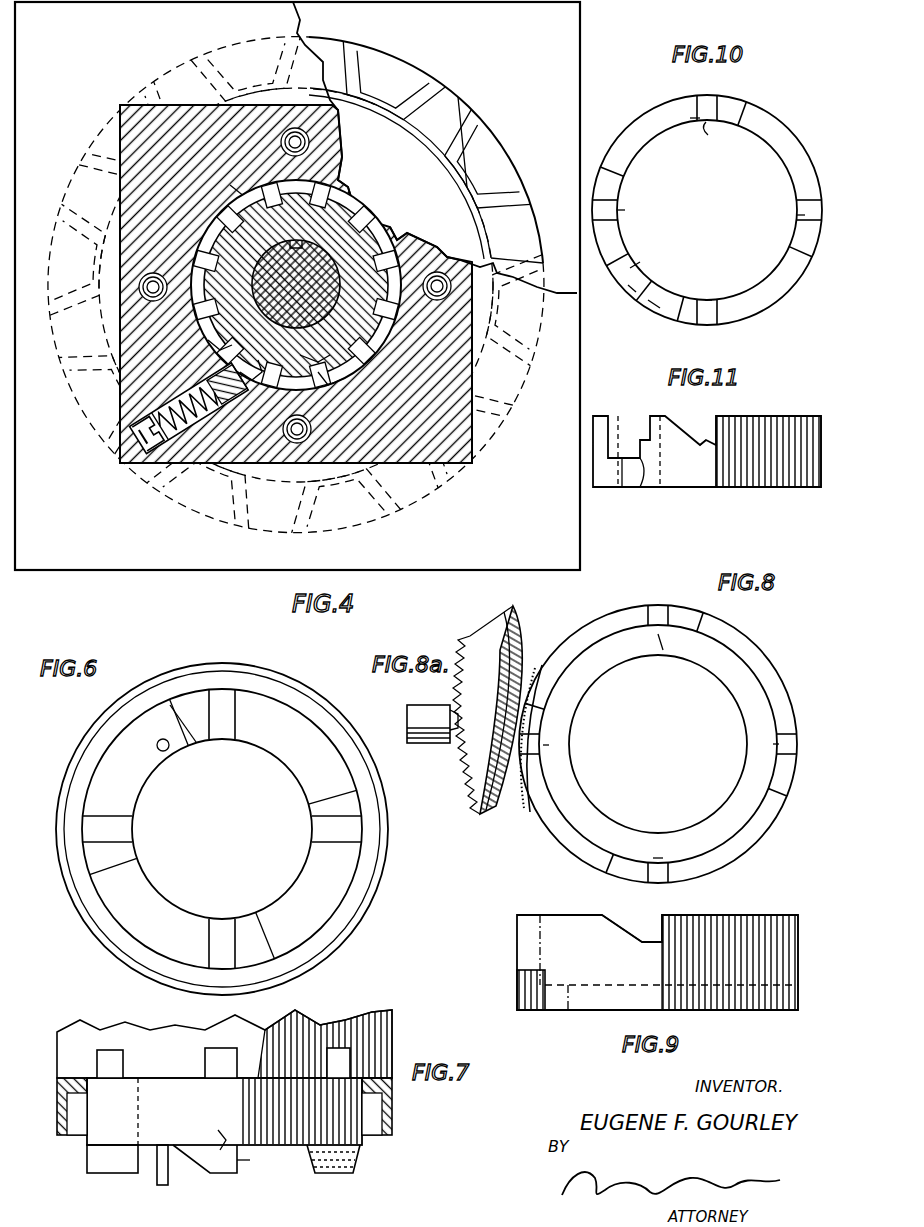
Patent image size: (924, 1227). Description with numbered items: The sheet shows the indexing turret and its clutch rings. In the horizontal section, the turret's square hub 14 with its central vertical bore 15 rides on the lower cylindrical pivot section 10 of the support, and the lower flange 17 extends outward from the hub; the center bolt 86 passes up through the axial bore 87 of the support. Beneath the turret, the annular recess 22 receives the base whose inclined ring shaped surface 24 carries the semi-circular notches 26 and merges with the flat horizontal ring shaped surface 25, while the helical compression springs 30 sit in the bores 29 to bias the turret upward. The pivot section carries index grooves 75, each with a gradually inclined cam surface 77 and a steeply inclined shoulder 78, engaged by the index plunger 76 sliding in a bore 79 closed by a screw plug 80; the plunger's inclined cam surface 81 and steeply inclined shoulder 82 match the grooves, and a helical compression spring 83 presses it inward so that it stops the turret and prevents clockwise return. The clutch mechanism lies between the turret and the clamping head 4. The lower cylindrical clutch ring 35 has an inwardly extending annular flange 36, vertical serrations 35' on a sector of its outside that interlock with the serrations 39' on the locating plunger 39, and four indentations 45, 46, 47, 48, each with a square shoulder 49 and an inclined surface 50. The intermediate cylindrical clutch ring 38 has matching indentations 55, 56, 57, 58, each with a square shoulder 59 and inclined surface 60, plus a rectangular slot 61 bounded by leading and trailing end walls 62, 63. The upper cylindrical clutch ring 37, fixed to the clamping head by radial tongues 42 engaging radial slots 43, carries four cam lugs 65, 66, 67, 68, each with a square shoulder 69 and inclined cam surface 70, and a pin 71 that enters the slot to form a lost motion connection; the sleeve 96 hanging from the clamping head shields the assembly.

In FIG. 7, the clamping head 4 is at (385, 1010).
In FIG. 4, the lower cylindrical pivot section 10 is at (225, 186).
In FIG. 4, the square hub 14 is at (188, 170).
In FIG. 4, the central vertical bore 15 is at (345, 203).
In FIG. 4, the outwardly extending flange 17 is at (128, 560).
In FIG. 4, the annular recess 22 is at (400, 72).
In FIG. 4, the inclined ring shaped surface 24 is at (455, 112).
In FIG. 4, the flat horizontal ring shaped surface 25 is at (438, 203).
In FIG. 4, the semi-circular notches 26 is at (480, 138).
In FIG. 4, the bores 29 is at (280, 138).
In FIG. 4, the helical compression springs 30 is at (158, 300).
In FIG. 8, the lower cylindrical clutch ring 35 is at (659, 744).
In FIG. 8a, the lower cylindrical clutch ring 35 is at (469, 710).
In FIG. 9, the lower cylindrical clutch ring 35 is at (630, 962).
In FIG. 8a, the vertical serrations 35' is at (480, 720).
In FIG. 9, the vertical serrations 35' is at (503, 990).
In FIG. 8, the inwardly extending annular flange 36 is at (569, 788).
In FIG. 9, the inwardly extending annular flange 36 is at (552, 980).
In FIG. 6, the upper cylindrical clutch ring 37 is at (298, 736).
In FIG. 7, the upper cylindrical clutch ring 37 is at (278, 1148).
In FIG. 10, the intermediate cylindrical clutch ring 38 is at (790, 272).
In FIG. 11, the intermediate cylindrical clutch ring 38 is at (768, 488).
In FIG. 8a, the locating plunger 39 is at (427, 739).
In FIG. 8a, the vertical serrations 39' is at (432, 704).
In FIG. 7, the radial tongues 42 is at (330, 1060).
In FIG. 7, the radial slots 43 is at (210, 1062).
In FIG. 8, the indentation 45 is at (662, 862).
In FIG. 9, the indentation 45 is at (650, 942).
In FIG. 8, the indentation 46 is at (775, 744).
In FIG. 8, the indentation 47 is at (658, 650).
In FIG. 8, the indentation 48 is at (549, 742).
In FIG. 8, the square shoulder 49 is at (642, 612).
In FIG. 9, the square shoulder 49 is at (665, 930).
In FIG. 8, the inclined surface 50 is at (670, 616).
In FIG. 9, the inclined surface 50 is at (620, 918).
In FIG. 10, the indentation 55 is at (708, 302).
In FIG. 11, the indentation 55 is at (720, 445).
In FIG. 10, the indentation 56 is at (800, 214).
In FIG. 10, the indentation 57 is at (722, 138).
In FIG. 10, the indentation 58 is at (622, 212).
In FIG. 10, the square shoulder 59 is at (692, 112).
In FIG. 11, the square shoulder 59 is at (716, 426).
In FIG. 10, the inclined surface 60 is at (735, 112).
In FIG. 11, the inclined surface 60 is at (680, 440).
In FIG. 10, the rectangular slot 61 is at (636, 294).
In FIG. 11, the rectangular slot 61 is at (630, 488).
In FIG. 10, the leading end wall 62 is at (660, 308).
In FIG. 11, the leading end wall 62 is at (655, 488).
In FIG. 10, the trailing end wall 63 is at (637, 262).
In FIG. 11, the trailing end wall 63 is at (620, 422).
In FIG. 6, the cam lug 65 is at (222, 736).
In FIG. 7, the cam lug 65 is at (220, 1138).
In FIG. 6, the cam lug 66 is at (320, 829).
In FIG. 7, the cam lug 66 is at (330, 1176).
In FIG. 6, the cam lug 67 is at (222, 918).
In FIG. 6, the cam lug 68 is at (126, 830).
In FIG. 7, the cam lug 68 is at (108, 1176).
In FIG. 6, the square shoulder 69 is at (258, 648).
In FIG. 7, the square shoulder 69 is at (244, 1170).
In FIG. 6, the inclined cam surface 70 is at (186, 716).
In FIG. 7, the inclined cam surface 70 is at (206, 1172).
In FIG. 6, the pin 71 is at (165, 752).
In FIG. 7, the pin 71 is at (160, 1186).
In FIG. 4, the index grooves 75 is at (295, 284).
In FIG. 4, the index plunger 76 is at (228, 396).
In FIG. 4, the inclined cam surface 77 is at (335, 384).
In FIG. 4, the steeply inclined shoulder 78 is at (315, 350).
In FIG. 4, the bore 79 is at (160, 398).
In FIG. 4, the screw plug 80 is at (145, 458).
In FIG. 4, the inclined cam surface 81 is at (258, 357).
In FIG. 4, the steeply inclined shoulder 82 is at (225, 331).
In FIG. 4, the helical compression spring 83 is at (178, 458).
In FIG. 4, the center bolt 86 is at (299, 274).
In FIG. 4, the axial bore 87 is at (292, 228).
In FIG. 6, the sleeve 96 is at (390, 870).
In FIG. 7, the sleeve 96 is at (385, 1115).